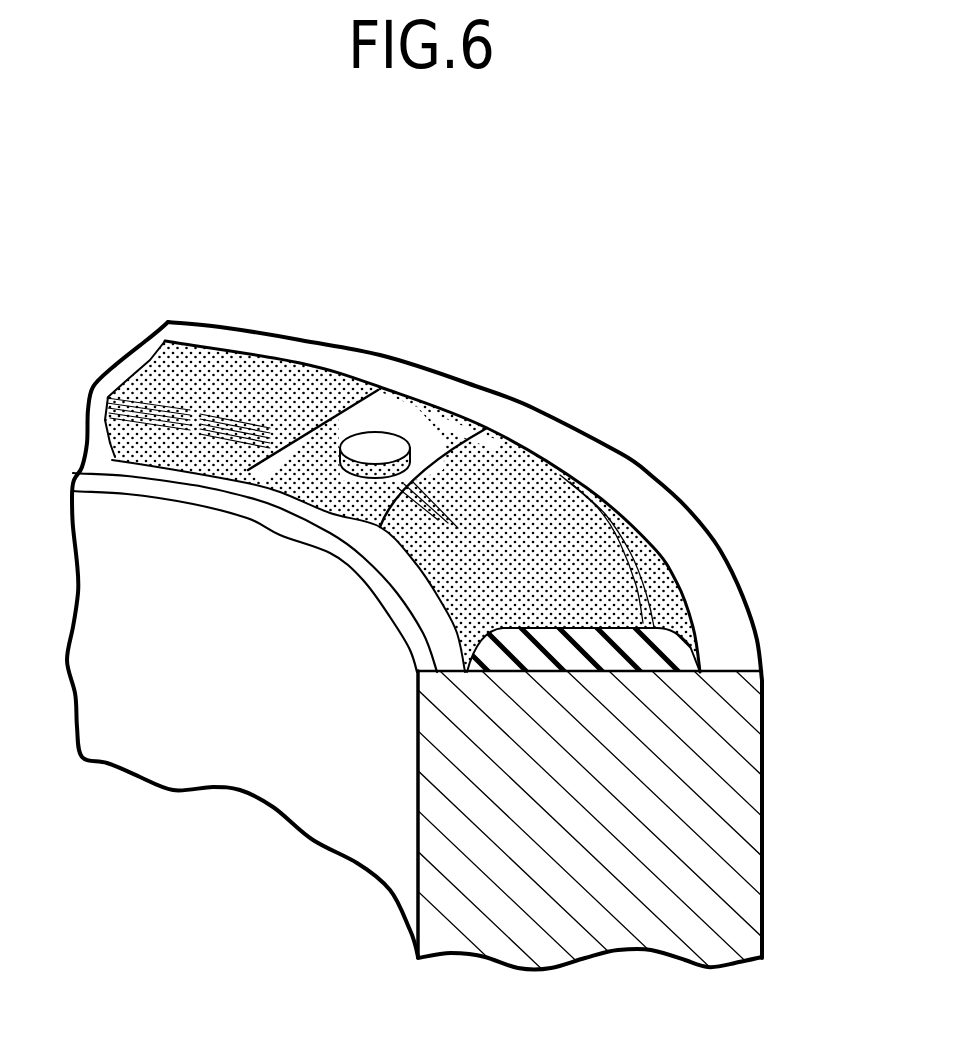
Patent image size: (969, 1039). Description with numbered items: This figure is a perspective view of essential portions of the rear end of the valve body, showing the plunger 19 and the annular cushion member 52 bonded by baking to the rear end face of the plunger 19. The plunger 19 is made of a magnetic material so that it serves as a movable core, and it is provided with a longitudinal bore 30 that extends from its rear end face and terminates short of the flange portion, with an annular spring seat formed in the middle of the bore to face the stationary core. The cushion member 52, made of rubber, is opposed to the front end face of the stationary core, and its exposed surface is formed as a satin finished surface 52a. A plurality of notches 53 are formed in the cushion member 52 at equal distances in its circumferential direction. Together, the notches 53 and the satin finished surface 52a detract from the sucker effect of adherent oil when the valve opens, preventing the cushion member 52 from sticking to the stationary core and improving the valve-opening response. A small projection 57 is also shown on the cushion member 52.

The plunger 19 is at (737, 772).
The longitudinal bore 30 is at (417, 857).
The cushion member 52 is at (582, 650).
The satin finished surface 52a is at (553, 513).
The notch 53 is at (452, 466).
The projection 57 is at (367, 442).